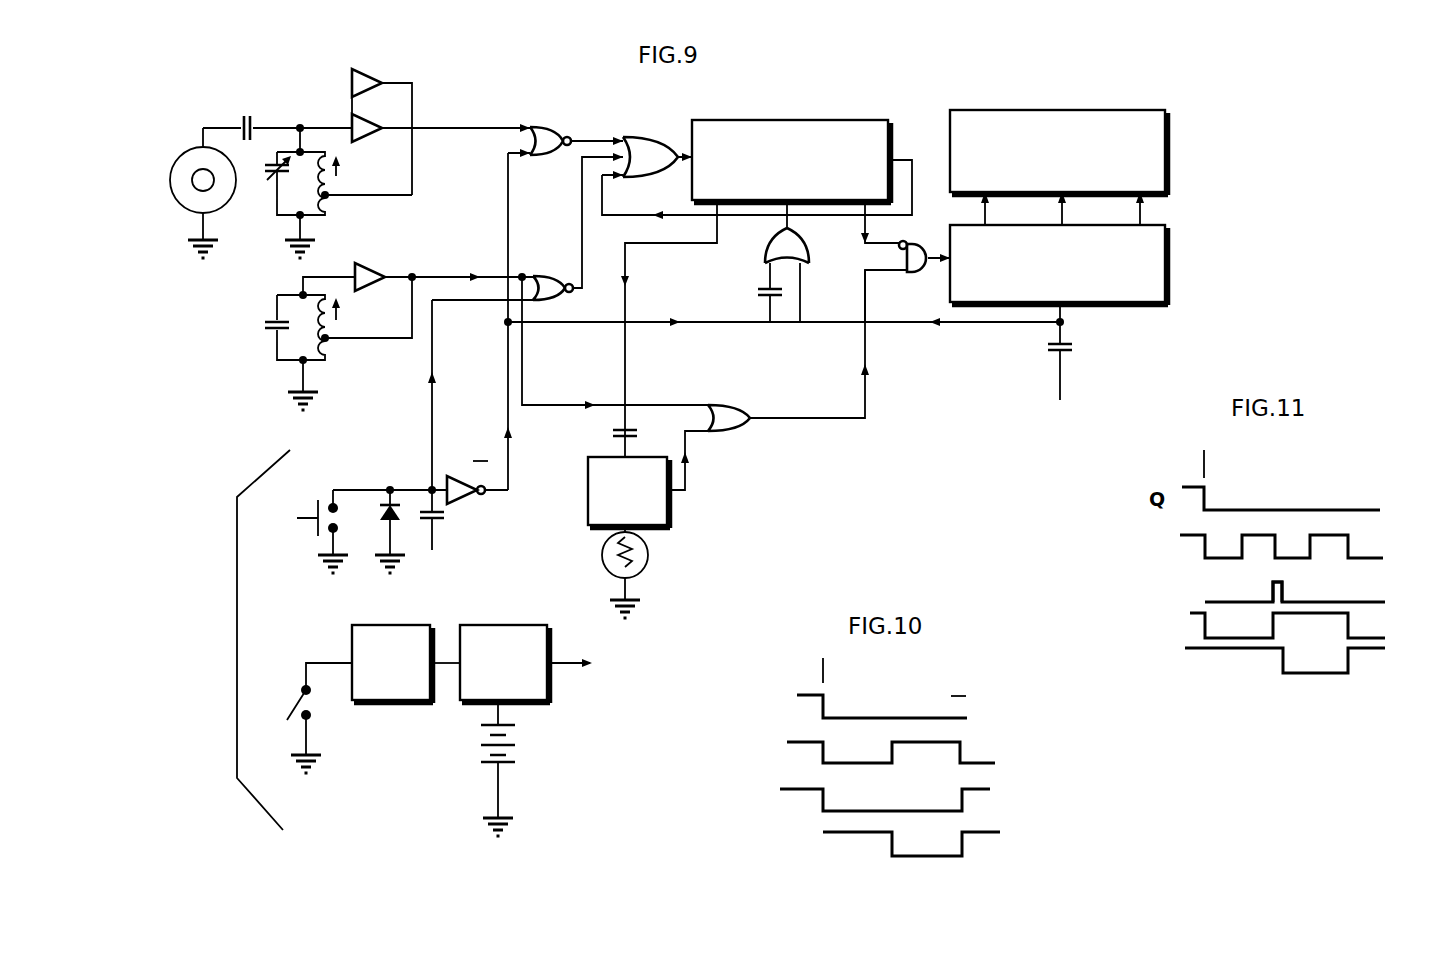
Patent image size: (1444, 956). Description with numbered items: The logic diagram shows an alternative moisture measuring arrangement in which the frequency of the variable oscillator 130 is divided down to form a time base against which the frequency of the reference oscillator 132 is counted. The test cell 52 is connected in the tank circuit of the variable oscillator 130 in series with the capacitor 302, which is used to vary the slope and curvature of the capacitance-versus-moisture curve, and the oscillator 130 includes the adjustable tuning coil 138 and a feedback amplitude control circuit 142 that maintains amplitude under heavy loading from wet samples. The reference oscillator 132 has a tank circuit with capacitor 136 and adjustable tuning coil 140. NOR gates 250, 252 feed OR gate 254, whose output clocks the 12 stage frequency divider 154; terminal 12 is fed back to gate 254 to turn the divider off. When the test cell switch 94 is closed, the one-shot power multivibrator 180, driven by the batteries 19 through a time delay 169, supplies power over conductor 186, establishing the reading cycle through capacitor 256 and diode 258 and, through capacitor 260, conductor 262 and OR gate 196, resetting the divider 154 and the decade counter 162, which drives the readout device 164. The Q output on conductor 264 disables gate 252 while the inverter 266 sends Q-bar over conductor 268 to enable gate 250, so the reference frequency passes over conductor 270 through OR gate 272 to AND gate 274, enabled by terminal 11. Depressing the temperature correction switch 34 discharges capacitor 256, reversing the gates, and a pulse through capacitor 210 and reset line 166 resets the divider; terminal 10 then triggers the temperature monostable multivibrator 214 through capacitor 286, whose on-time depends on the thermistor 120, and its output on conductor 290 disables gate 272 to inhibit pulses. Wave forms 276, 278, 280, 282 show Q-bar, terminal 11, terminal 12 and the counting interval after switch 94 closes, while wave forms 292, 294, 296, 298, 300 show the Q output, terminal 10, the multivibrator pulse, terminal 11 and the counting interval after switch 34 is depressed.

In FIG. 9, the test cell 52 is at (172, 204).
In FIG. 9, the capacitor 302 is at (243, 121).
In FIG. 9, the variable oscillator 130 is at (345, 117).
In FIG. 9, the feedback amplitude control circuit 142 is at (368, 70).
In FIG. 9, the adjustable tuning coil 138 is at (330, 195).
In FIG. 9, the reference oscillator 132 is at (374, 262).
In FIG. 9, the adjustable tuning coil 140 is at (330, 338).
In FIG. 9, the capacitor 136 is at (268, 332).
In FIG. 9, the NOR gate 250 is at (540, 126).
In FIG. 9, the NOR gate 252 is at (541, 274).
In FIG. 9, the OR gate 254 is at (642, 137).
In FIG. 9, the 12 stage frequency divider 154 is at (790, 119).
In FIG. 9, the terminal 10 is at (718, 200).
In FIG. 9, the terminal 11 is at (865, 198).
In FIG. 9, the terminal 12 is at (898, 158).
In FIG. 9, the reset line 166 is at (836, 222).
In FIG. 9, the OR gate 196 is at (768, 250).
In FIG. 9, the capacitor 210 is at (756, 292).
In FIG. 9, the AND gate 274 is at (906, 281).
In FIG. 9, the conductor 262 is at (965, 330).
In FIG. 9, the capacitor 260 is at (1072, 350).
In FIG. 9, the readout device 164 is at (1168, 146).
In FIG. 9, the decade counter 162 is at (1168, 240).
In FIG. 9, the OR gate 272 is at (742, 404).
In FIG. 9, the conductor 270 is at (528, 396).
In FIG. 9, the capacitor 286 is at (638, 436).
In FIG. 9, the conductor 290 is at (690, 470).
In FIG. 9, the temperature monostable multivibrator 214 is at (669, 505).
In FIG. 11, the temperature monostable multivibrator 214 is at (1259, 594).
In FIG. 9, the thermistor 120 is at (650, 548).
In FIG. 9, the conductor 264 is at (428, 391).
In FIG. 9, the inverter 266 is at (470, 477).
In FIG. 9, the conductor 268 is at (510, 480).
In FIG. 9, the temperature correction switch 34 is at (312, 503).
In FIG. 11, the temperature correction switch 34 is at (1199, 462).
In FIG. 9, the diode 258 is at (383, 521).
In FIG. 9, the capacitor 256 is at (441, 521).
In FIG. 9, the test cell switch 94 is at (292, 696).
In FIG. 10, the test cell switch 94 is at (826, 673).
In FIG. 9, the time delay 169 is at (373, 703).
In FIG. 9, the one-shot power multivibrator 180 is at (550, 688).
In FIG. 9, the conductor 186 is at (590, 661).
In FIG. 9, the batteries 19 is at (512, 738).
In FIG. 10, the wave form 276 is at (878, 716).
In FIG. 10, the wave form 278 is at (861, 762).
In FIG. 10, the wave form 280 is at (862, 810).
In FIG. 10, the wave form 282 is at (945, 858).
In FIG. 11, the Q waveform 292 is at (1278, 508).
In FIG. 11, the fR/2^10 waveform 294 is at (1350, 549).
In FIG. 11, the wave form 296 is at (1285, 591).
In FIG. 11, the wave form 298 is at (1352, 631).
In FIG. 11, the wave form 300 is at (1352, 668).